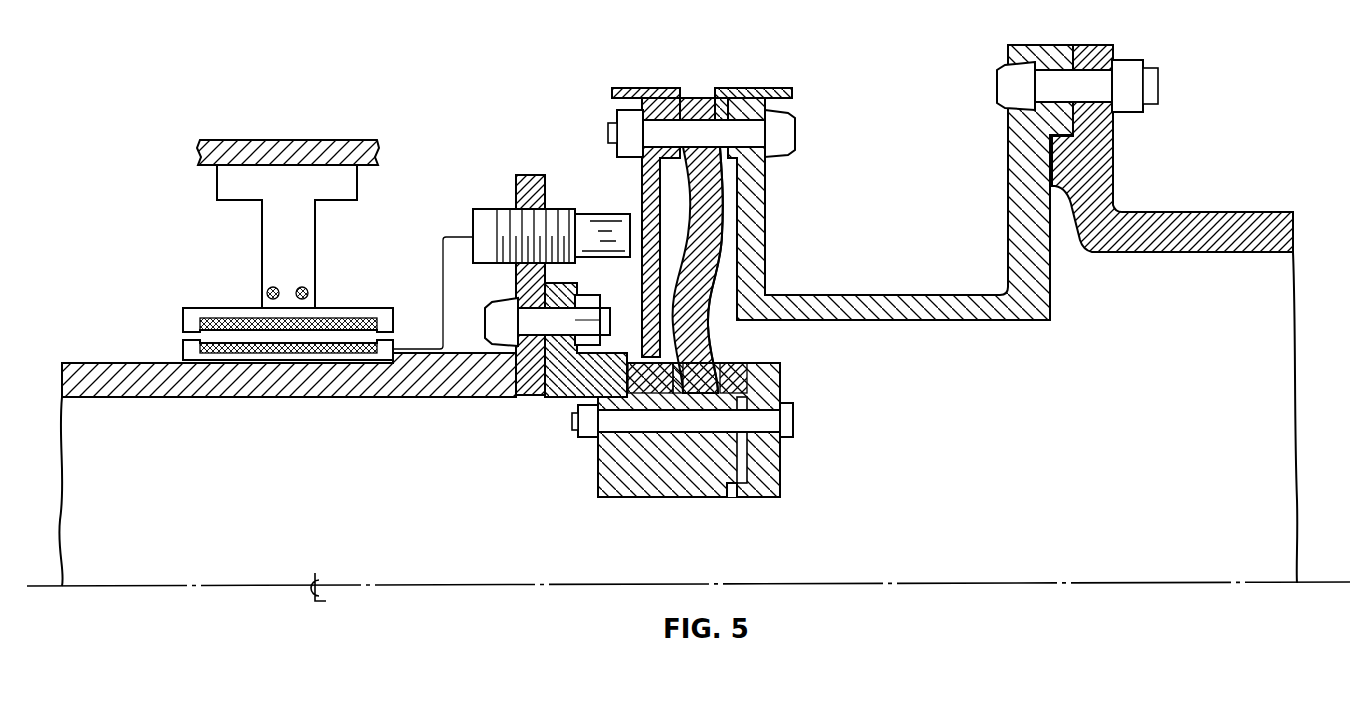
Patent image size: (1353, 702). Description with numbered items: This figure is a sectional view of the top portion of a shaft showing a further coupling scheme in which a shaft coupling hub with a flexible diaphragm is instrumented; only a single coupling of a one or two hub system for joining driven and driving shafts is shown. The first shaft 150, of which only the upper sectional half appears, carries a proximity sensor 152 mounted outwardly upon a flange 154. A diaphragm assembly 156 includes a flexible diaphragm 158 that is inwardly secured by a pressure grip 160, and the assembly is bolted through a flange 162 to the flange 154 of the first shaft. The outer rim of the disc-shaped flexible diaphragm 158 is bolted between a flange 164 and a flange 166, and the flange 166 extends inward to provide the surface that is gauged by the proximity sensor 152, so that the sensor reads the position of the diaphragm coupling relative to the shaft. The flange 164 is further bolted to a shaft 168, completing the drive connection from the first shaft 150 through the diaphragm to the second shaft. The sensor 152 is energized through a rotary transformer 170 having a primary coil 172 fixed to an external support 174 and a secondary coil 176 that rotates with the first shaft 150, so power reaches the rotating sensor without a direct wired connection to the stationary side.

The first shaft 150 is at (303, 388).
The proximity sensor 152 is at (502, 208).
The flange 154 is at (533, 175).
The diaphragm assembly 156 is at (722, 334).
The flexible diaphragm 158 is at (703, 293).
The pressure grip 160 is at (732, 457).
The flange 162 is at (570, 395).
The flange 164 is at (767, 190).
The flange 166 is at (642, 190).
The shaft 168 is at (1103, 178).
The rotary transformer 170 is at (331, 304).
The primary coil 172 is at (233, 308).
The external support 174 is at (222, 183).
The secondary coil 176 is at (183, 350).